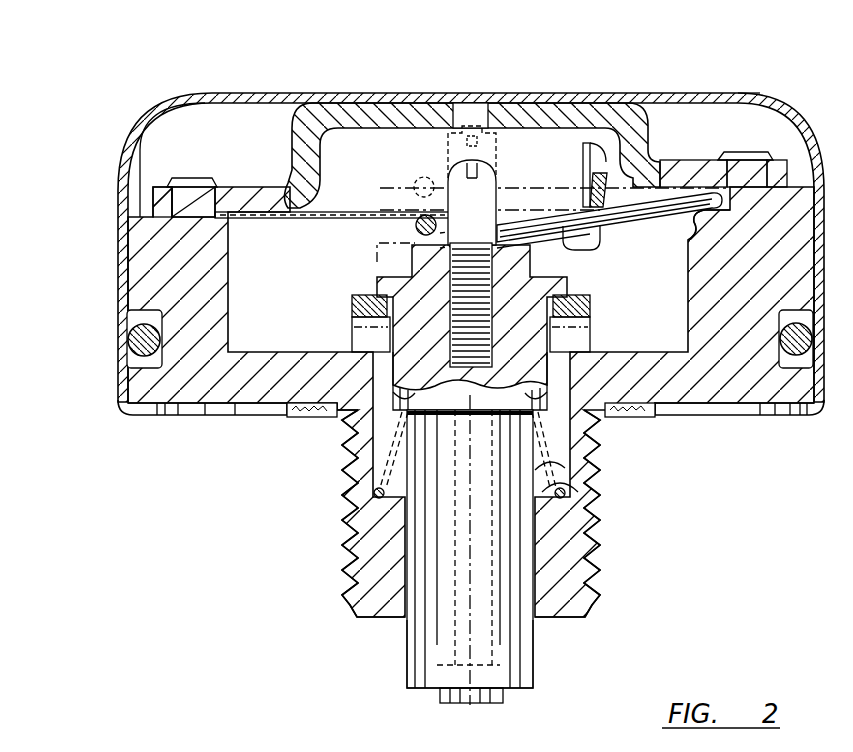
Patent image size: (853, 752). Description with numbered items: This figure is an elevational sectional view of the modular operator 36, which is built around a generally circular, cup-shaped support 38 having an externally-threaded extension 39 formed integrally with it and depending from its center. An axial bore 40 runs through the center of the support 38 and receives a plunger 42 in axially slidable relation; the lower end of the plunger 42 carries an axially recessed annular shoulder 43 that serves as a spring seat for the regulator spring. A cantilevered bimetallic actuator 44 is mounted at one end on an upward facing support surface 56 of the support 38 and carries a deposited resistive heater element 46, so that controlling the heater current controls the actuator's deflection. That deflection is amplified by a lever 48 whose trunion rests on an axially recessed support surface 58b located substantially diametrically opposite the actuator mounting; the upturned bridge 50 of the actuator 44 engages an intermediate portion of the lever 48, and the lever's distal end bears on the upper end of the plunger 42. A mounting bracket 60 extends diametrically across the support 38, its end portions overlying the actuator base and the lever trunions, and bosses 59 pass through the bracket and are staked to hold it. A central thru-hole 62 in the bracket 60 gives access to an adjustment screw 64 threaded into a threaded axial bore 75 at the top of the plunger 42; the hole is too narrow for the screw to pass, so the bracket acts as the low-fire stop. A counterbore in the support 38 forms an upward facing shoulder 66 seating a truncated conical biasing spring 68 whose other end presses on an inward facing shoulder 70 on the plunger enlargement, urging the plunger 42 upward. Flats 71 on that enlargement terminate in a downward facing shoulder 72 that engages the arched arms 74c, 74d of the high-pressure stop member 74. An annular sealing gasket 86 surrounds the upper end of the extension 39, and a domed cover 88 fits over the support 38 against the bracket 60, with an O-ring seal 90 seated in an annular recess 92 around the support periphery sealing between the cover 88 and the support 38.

The modular operator 36 is at (745, 82).
The support 38 is at (728, 265).
The externally-threaded extension 39 is at (357, 555).
The axial bore 40 is at (530, 598).
The plunger 42 is at (407, 639).
The annular shoulder 43 is at (440, 690).
The bimetallic actuator 44 is at (257, 218).
The resistive heater element 46 is at (370, 217).
The lever 48 is at (625, 228).
The bridge 50 is at (587, 153).
The support surface 56 is at (142, 175).
The support surface 58b is at (690, 228).
The bosses 59 is at (200, 178).
The mounting bracket 60 is at (298, 125).
The axial thru-hole 62 is at (480, 105).
The adjustment screw 64 is at (448, 176).
The shoulder 66 is at (568, 485).
The biasing spring 68 is at (550, 462).
The shoulder 70 is at (565, 421).
The flats 71 is at (362, 378).
The shoulder 72 is at (592, 288).
The stop member 74 is at (592, 336).
The arm 74c is at (592, 305).
The arm 74d is at (352, 303).
The threaded axial bore 75 is at (488, 335).
The annular sealing gasket 86 is at (308, 418).
The cover 88 is at (782, 107).
The O-ring seal 90 is at (143, 340).
The annular recess 92 is at (130, 324).